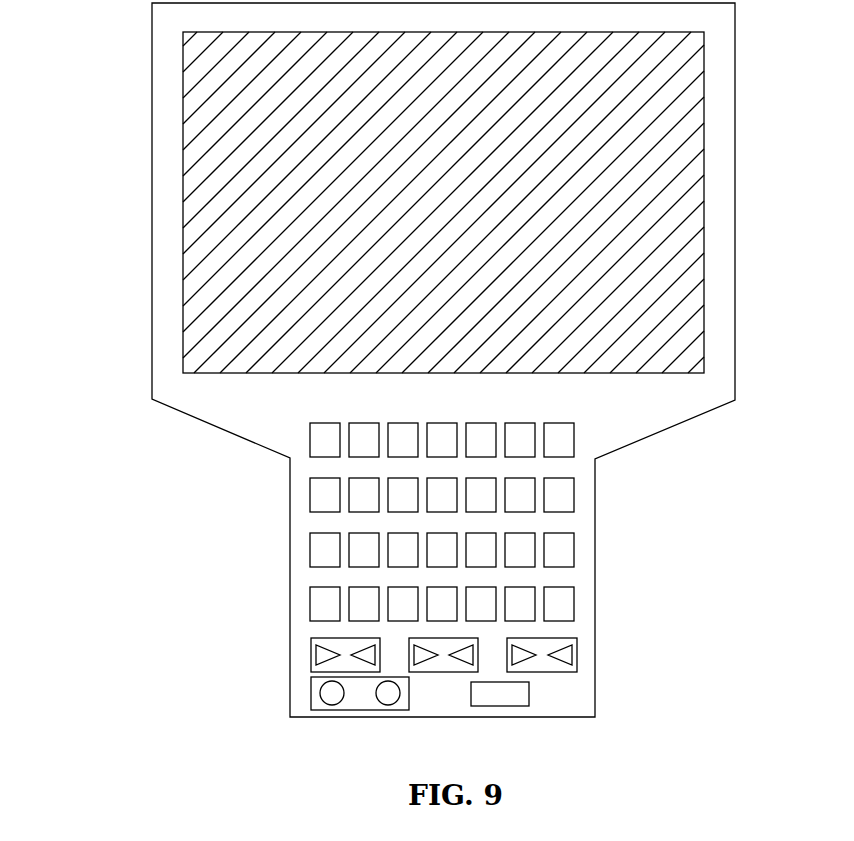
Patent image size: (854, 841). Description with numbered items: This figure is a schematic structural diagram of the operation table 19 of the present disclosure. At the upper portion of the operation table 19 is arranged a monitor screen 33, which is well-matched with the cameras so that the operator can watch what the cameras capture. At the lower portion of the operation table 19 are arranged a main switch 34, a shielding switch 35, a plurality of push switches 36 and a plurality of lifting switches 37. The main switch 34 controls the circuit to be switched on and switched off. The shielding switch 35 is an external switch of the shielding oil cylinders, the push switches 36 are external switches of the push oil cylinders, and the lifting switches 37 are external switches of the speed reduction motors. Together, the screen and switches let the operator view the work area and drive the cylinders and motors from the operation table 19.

The operation table 19 is at (400, 360).
The monitor screen 33 is at (384, 202).
The main switch 34 is at (601, 610).
The shielding switch 35 is at (234, 594).
The push switches 36 is at (318, 509).
The lifting switches 37 is at (318, 404).